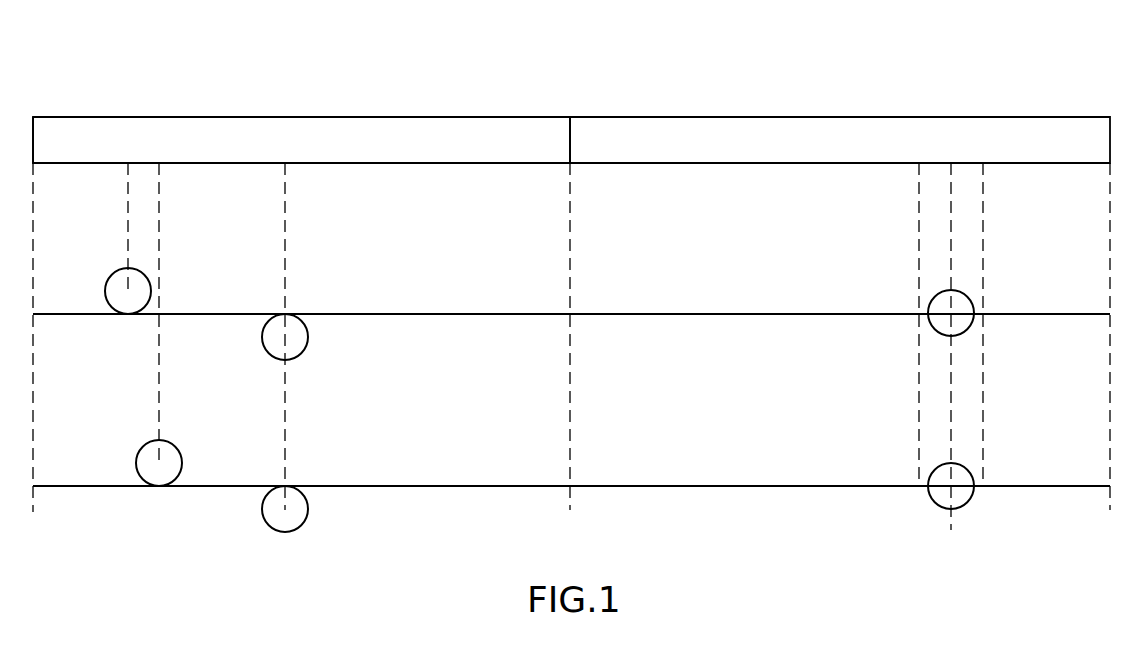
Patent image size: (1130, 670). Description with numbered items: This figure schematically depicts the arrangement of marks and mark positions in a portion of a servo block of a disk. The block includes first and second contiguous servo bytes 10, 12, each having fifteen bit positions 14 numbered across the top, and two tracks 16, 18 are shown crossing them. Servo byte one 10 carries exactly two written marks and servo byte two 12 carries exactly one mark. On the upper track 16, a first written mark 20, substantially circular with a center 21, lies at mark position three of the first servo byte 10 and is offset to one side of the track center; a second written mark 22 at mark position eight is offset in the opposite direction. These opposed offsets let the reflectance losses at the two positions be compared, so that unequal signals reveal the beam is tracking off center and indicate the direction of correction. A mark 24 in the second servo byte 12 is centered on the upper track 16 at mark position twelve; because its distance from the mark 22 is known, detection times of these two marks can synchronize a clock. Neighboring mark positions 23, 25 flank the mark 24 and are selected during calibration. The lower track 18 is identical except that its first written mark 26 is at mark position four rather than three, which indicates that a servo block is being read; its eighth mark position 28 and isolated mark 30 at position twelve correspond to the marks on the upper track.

The first servo byte 10 is at (117, 122).
The second servo byte 12 is at (638, 122).
The bit positions 14 is at (33, 150).
The upper track 16 is at (33, 313).
The lower track 18 is at (33, 487).
The first written mark 20 is at (113, 272).
The center 21 is at (127, 290).
The second written mark 22 is at (267, 353).
The eleventh mark position 23 is at (919, 275).
The mark 24 is at (935, 330).
The thirteenth mark position 25 is at (983, 297).
The first written mark 26 is at (176, 447).
The eighth mark position 28 is at (268, 526).
The mark 30 is at (936, 466).